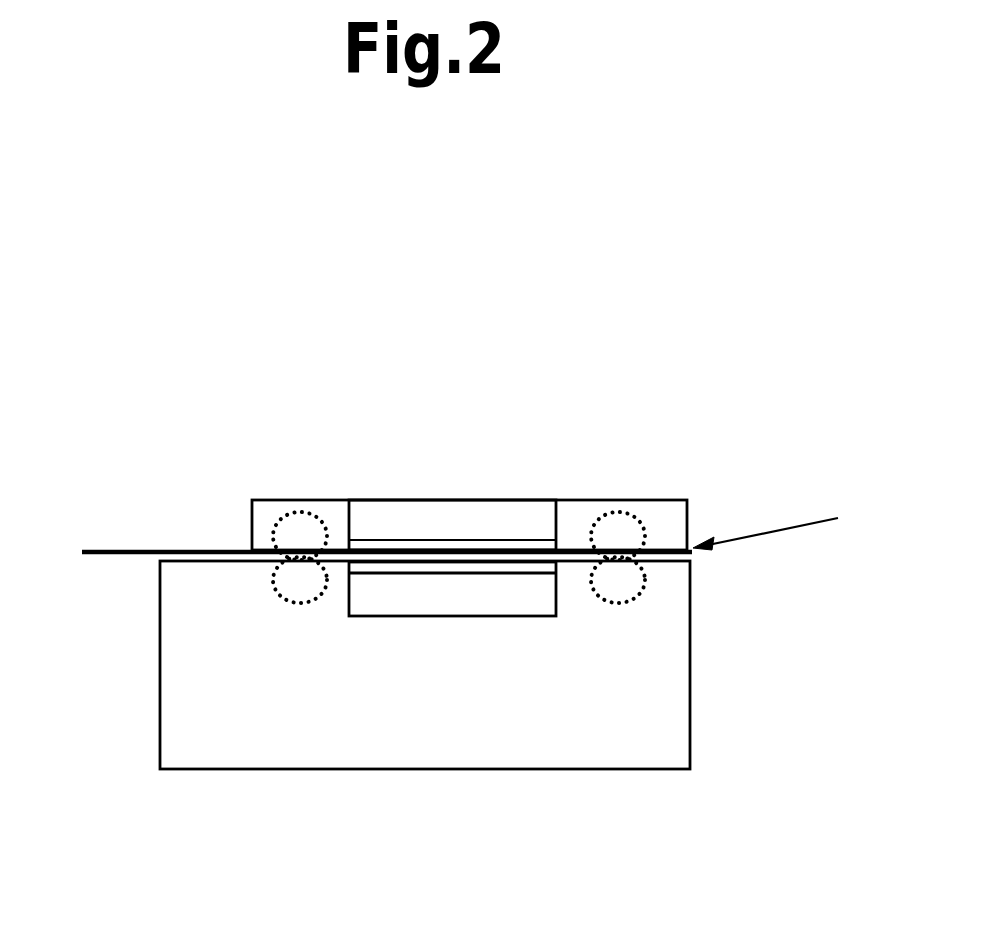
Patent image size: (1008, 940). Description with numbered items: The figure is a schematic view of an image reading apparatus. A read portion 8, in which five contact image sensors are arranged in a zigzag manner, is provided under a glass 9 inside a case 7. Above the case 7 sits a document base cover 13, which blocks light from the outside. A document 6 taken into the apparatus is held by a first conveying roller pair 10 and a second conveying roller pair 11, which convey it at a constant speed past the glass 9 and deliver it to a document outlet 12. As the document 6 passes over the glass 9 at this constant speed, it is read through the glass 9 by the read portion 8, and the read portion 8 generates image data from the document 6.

The document 6 is at (197, 553).
The case 7 is at (447, 730).
The read portion 8 is at (503, 598).
The glass 9 is at (512, 570).
The first conveying roller pair 10 is at (283, 522).
The second conveying roller pair 11 is at (638, 518).
The document outlet 12 is at (801, 525).
The document base cover 13 is at (517, 518).